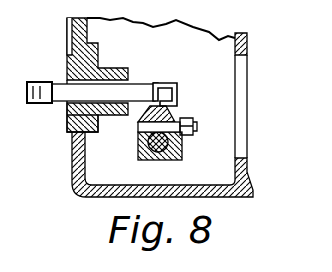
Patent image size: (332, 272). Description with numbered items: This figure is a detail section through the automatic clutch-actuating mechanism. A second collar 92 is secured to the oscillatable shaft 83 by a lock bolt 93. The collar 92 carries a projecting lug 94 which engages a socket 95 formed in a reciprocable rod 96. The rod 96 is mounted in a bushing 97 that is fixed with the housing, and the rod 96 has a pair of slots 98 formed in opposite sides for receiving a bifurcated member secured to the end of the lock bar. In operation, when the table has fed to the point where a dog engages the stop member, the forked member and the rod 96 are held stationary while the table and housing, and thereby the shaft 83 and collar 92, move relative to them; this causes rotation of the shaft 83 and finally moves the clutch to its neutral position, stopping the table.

The oscillatable shaft 83 is at (151, 159).
The second collar 92 is at (181, 148).
The lock bolt 93 is at (180, 116).
The projecting lug 94 is at (179, 92).
The socket 95 is at (160, 82).
The reciprocable rod 96 is at (141, 87).
The bushing 97 is at (114, 116).
The slots 98 is at (42, 82).